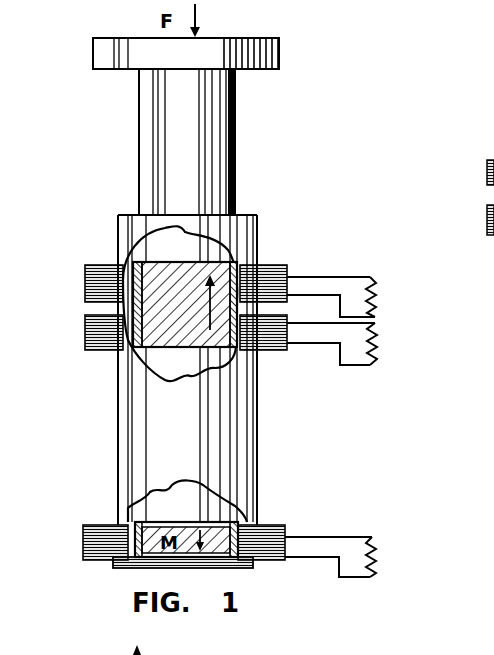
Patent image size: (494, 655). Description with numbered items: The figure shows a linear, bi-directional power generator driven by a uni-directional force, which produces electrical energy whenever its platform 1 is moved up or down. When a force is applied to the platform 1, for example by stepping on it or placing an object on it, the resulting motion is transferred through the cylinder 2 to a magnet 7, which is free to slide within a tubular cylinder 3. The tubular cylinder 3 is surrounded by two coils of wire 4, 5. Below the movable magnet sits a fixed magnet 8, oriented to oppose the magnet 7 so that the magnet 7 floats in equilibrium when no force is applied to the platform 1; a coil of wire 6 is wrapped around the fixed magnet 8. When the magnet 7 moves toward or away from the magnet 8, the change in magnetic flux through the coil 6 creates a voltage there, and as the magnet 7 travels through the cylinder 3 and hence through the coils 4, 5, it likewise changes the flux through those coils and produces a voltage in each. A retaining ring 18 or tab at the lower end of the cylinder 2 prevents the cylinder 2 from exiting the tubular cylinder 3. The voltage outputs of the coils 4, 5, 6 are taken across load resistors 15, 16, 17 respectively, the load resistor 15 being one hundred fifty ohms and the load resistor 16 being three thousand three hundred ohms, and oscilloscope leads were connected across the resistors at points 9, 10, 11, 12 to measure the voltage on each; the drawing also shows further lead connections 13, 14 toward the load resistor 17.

The platform 1 is at (93, 58).
The cylinder 2 is at (237, 194).
The tubular cylinder 3 is at (117, 455).
The coil of wire 4 is at (88, 266).
The coil of wire 5 is at (85, 320).
The coil of wire 6 is at (83, 555).
The magnet 7 is at (253, 357).
The fixed magnet 8 is at (247, 520).
The measurement point 9 is at (370, 277).
The measurement point 10 is at (376, 313).
The measurement point 11 is at (376, 323).
The measurement point 12 is at (370, 365).
The lead wire 13 is at (372, 540).
The lead wire 14 is at (370, 577).
The load resistor 15 is at (375, 300).
The load resistor 16 is at (375, 350).
The load resistor 17 is at (375, 560).
The retaining ring 18 is at (257, 268).